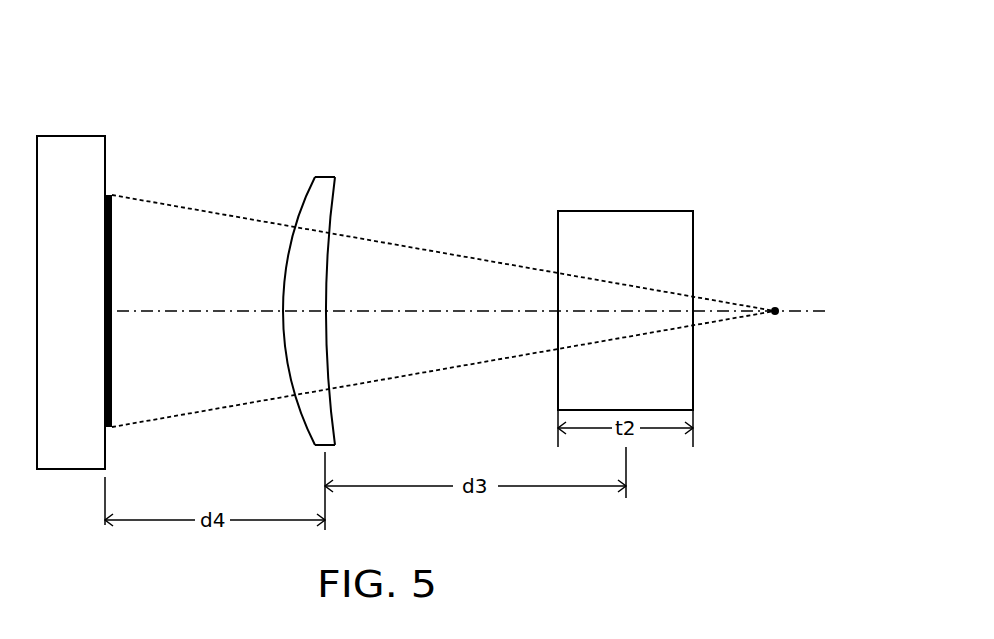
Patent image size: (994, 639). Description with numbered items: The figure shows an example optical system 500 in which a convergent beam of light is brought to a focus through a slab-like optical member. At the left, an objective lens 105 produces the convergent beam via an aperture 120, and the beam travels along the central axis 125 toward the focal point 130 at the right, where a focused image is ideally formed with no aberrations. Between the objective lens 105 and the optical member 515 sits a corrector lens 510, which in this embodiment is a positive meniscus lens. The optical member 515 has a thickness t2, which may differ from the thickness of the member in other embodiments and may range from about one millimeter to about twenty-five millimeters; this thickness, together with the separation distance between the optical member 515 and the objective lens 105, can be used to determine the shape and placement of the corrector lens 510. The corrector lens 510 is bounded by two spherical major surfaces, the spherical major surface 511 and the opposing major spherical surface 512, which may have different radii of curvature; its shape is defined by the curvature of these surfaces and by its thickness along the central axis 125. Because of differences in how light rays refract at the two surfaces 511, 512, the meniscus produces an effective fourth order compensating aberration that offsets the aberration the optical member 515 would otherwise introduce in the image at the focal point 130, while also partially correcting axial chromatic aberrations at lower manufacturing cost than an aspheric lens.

The optical system 500 is at (641, 89).
The objective lens 105 is at (105, 168).
The aperture 120 is at (113, 275).
The central axis 125 is at (157, 313).
The corrector lens 510 is at (305, 304).
The spherical major surface 511 is at (285, 268).
The opposing major spherical surface 512 is at (328, 277).
The optical member 515 is at (693, 250).
The focal point 130 is at (777, 306).